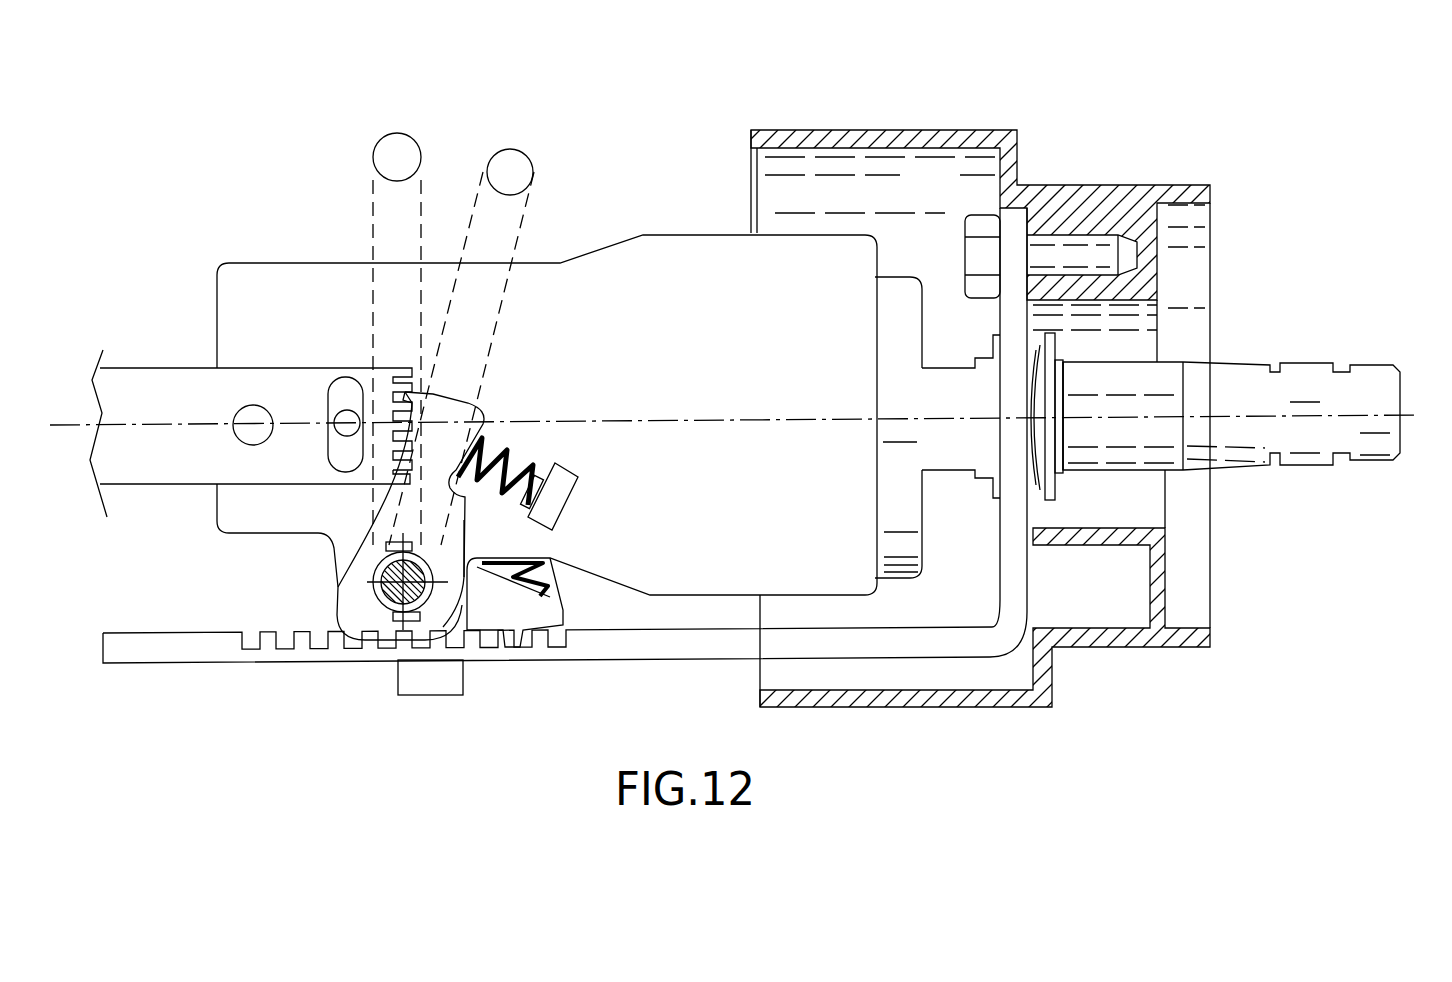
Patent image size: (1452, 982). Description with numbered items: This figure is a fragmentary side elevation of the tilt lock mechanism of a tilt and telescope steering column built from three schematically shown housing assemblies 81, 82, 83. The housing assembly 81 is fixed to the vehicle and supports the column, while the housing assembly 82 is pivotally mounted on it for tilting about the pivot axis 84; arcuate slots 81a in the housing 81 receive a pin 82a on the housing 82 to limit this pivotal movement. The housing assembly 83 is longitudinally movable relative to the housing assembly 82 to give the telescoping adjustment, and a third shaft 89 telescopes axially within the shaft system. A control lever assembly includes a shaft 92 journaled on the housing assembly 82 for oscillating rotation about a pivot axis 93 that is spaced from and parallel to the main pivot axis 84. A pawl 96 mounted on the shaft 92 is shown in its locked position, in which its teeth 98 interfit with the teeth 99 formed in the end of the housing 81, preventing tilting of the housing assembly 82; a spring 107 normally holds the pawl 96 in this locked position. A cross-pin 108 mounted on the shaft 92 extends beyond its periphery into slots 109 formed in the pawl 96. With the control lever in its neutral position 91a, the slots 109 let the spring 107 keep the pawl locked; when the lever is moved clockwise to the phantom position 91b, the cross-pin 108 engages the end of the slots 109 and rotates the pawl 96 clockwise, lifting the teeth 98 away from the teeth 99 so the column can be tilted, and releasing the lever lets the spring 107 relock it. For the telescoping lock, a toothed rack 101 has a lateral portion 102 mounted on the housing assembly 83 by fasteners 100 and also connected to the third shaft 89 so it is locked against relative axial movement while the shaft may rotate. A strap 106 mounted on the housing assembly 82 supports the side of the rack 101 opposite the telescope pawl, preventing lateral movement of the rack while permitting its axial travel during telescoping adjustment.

The housing assembly 81 is at (153, 393).
The arcuate slots 81a is at (337, 388).
The housing assembly 82 is at (613, 272).
The pin 82a is at (350, 433).
The housing assembly 83 is at (1078, 202).
The pivot axis 84 is at (253, 425).
The third shaft 89 is at (952, 390).
The neutral position 91a is at (385, 197).
The phantom position 91b is at (500, 210).
The shaft 92 is at (360, 563).
The pivot axis 93 is at (395, 583).
The pawl 96 is at (455, 410).
The teeth 98 is at (420, 403).
The teeth 99 is at (397, 368).
The fasteners 100 is at (983, 255).
The toothed rack 101 is at (505, 642).
The lateral portion 102 is at (1017, 505).
The strap 106 is at (430, 683).
The spring 107 is at (507, 460).
The cross-pin 108 is at (397, 617).
The slots 109 is at (458, 585).